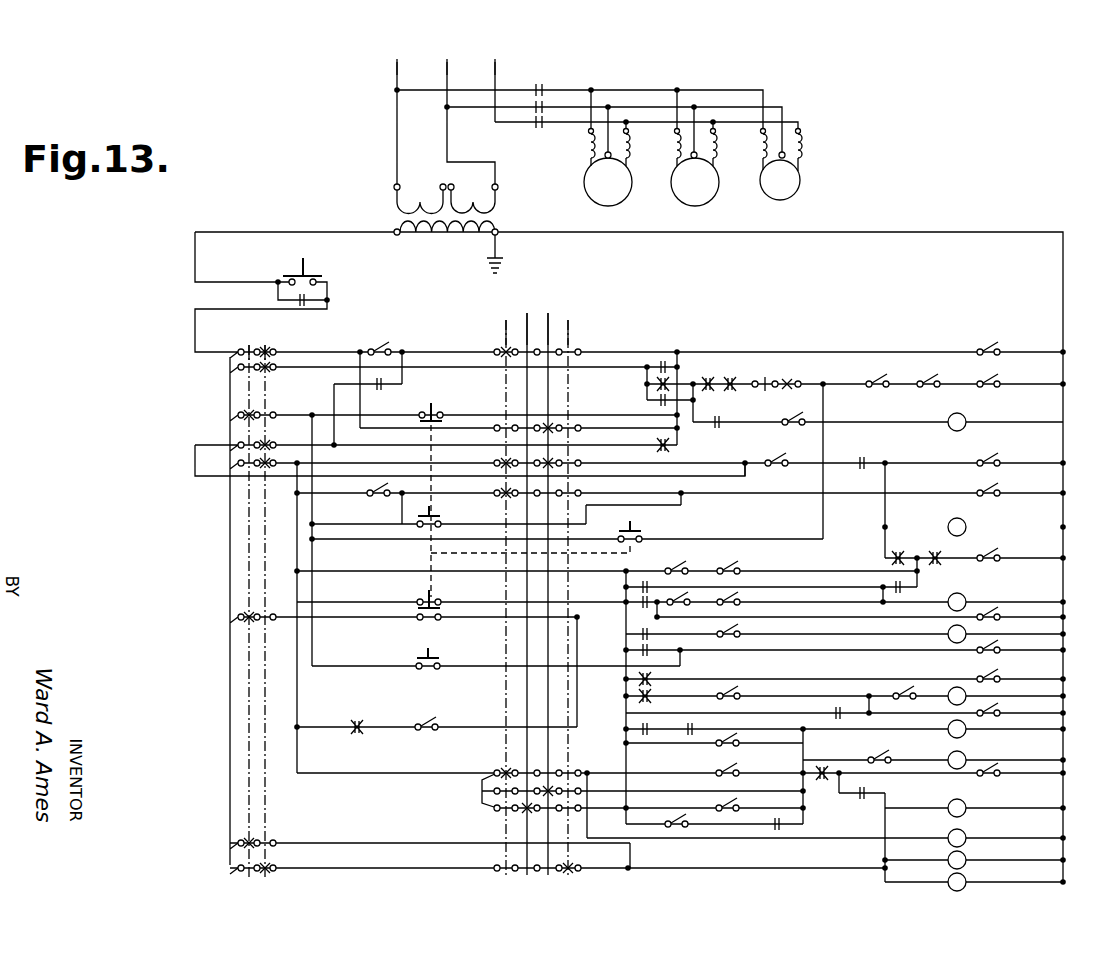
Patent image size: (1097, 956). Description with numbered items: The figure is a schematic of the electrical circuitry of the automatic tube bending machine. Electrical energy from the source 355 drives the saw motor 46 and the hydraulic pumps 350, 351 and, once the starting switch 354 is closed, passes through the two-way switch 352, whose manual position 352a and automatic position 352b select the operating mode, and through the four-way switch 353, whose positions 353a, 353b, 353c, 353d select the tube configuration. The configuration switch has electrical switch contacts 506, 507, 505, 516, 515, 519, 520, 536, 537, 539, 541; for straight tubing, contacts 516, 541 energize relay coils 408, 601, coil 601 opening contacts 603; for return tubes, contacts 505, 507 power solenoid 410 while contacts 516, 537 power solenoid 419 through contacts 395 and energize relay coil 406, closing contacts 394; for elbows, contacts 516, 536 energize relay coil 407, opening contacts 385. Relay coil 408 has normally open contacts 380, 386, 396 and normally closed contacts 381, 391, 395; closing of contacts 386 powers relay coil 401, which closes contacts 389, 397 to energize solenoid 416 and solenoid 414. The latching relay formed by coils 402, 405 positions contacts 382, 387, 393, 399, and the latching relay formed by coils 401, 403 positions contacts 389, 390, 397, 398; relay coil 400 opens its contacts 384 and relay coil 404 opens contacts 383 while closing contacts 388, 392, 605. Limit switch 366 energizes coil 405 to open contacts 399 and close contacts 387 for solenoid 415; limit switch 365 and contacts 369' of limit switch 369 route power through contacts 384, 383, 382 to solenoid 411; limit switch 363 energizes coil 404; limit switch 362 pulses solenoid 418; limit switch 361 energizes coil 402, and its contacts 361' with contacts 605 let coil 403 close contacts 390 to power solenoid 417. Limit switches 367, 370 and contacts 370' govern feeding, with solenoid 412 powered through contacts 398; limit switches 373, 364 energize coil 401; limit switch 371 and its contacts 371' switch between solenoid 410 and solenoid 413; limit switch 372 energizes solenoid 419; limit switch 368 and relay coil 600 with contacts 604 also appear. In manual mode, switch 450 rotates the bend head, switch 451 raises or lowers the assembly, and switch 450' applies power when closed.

The source 355 is at (446, 51).
The hydraulic pump 350 is at (630, 198).
The hydraulic pump 351 is at (717, 198).
The saw motor 46 is at (801, 183).
The starting switch 354 is at (322, 276).
The four-way switch 353 is at (560, 280).
The switch position 353a is at (503, 346).
The switch position 353b is at (527, 328).
The switch position 353c is at (548, 318).
The switch position 353d is at (570, 328).
The two-way switch 352 is at (345, 326).
The manual position 352a is at (790, 376).
The automatic position 352b is at (283, 345).
The limit switch 371 is at (396, 339).
The switch contact 506 is at (486, 348).
The switch contact 507 is at (577, 386).
The switch contact 505 is at (488, 421).
The switch contact 516 is at (486, 612).
The switch contact 515 is at (577, 457).
The switch contact 519 is at (489, 487).
The switch contact 520 is at (577, 486).
The switch contact 536 is at (576, 765).
The switch contact 537 is at (556, 784).
The switch contact 539 is at (556, 801).
The switch contact 541 is at (556, 861).
The relay contacts 380 is at (662, 364).
The relay contacts 381 is at (650, 384).
The relay contacts 382 is at (652, 400).
The relay contacts 383 is at (733, 377).
The relay contacts 384 is at (708, 378).
The relay contacts 385 is at (372, 396).
The relay contacts 605 is at (724, 420).
The limit switch contacts 361' is at (847, 548).
The limit switch 365 is at (875, 393).
The limit switch contacts 369' is at (910, 395).
The relay coil 403 is at (967, 415).
The solenoid 410 is at (994, 350).
The solenoid 411 is at (1000, 383).
The solenoid 412 is at (993, 461).
The solenoid 413 is at (993, 493).
The solenoid 414 is at (993, 558).
The limit switch 369 is at (770, 449).
The relay coil 400 is at (950, 520).
The relay contacts 398 is at (892, 557).
The relay contacts 399 is at (931, 556).
The relay contacts 397 is at (905, 590).
The relay coil 401 is at (966, 600).
The solenoid 415 is at (1002, 616).
The limit switch 367 is at (668, 569).
The limit switch 370 is at (720, 561).
The relay contacts 386 is at (640, 591).
The relay contacts 387 is at (640, 603).
The relay contacts 388 is at (640, 633).
The relay contacts 389 is at (640, 651).
The relay contacts 390 is at (638, 678).
The relay contacts 391 is at (638, 694).
The relay contacts 392 is at (640, 728).
The relay contacts 393 is at (698, 726).
The limit switch 373 is at (682, 603).
The limit switch 364 is at (735, 604).
The limit switch 361 is at (749, 626).
The limit switch 362 is at (728, 692).
The relay coil 402 is at (946, 641).
The relay coil 600 is at (950, 690).
The solenoid 416 is at (983, 655).
The solenoid 417 is at (1002, 677).
The relay contact 604 is at (832, 713).
The solenoid 418 is at (1008, 716).
The relay coil 404 is at (968, 734).
The relay coil 405 is at (949, 756).
The relay coil 406 is at (949, 805).
The solenoid 419 is at (998, 778).
The relay coil 407 is at (968, 836).
The relay coil 601 is at (968, 858).
The relay coil 408 is at (968, 884).
The relay contacts 395 is at (822, 768).
The limit switch 366 is at (878, 757).
The relay contacts 396 is at (850, 794).
The relay contacts 394 is at (790, 825).
The limit switch 363 is at (720, 744).
The limit switch 368 is at (715, 772).
The limit switch 372 is at (728, 815).
The limit switch contacts 370' is at (554, 778).
The limit switch contacts 371' is at (364, 503).
The manual switch 451 is at (433, 407).
The manual switch 450 is at (406, 653).
The manual switch 450' is at (550, 561).
The relay contacts 603 is at (352, 720).